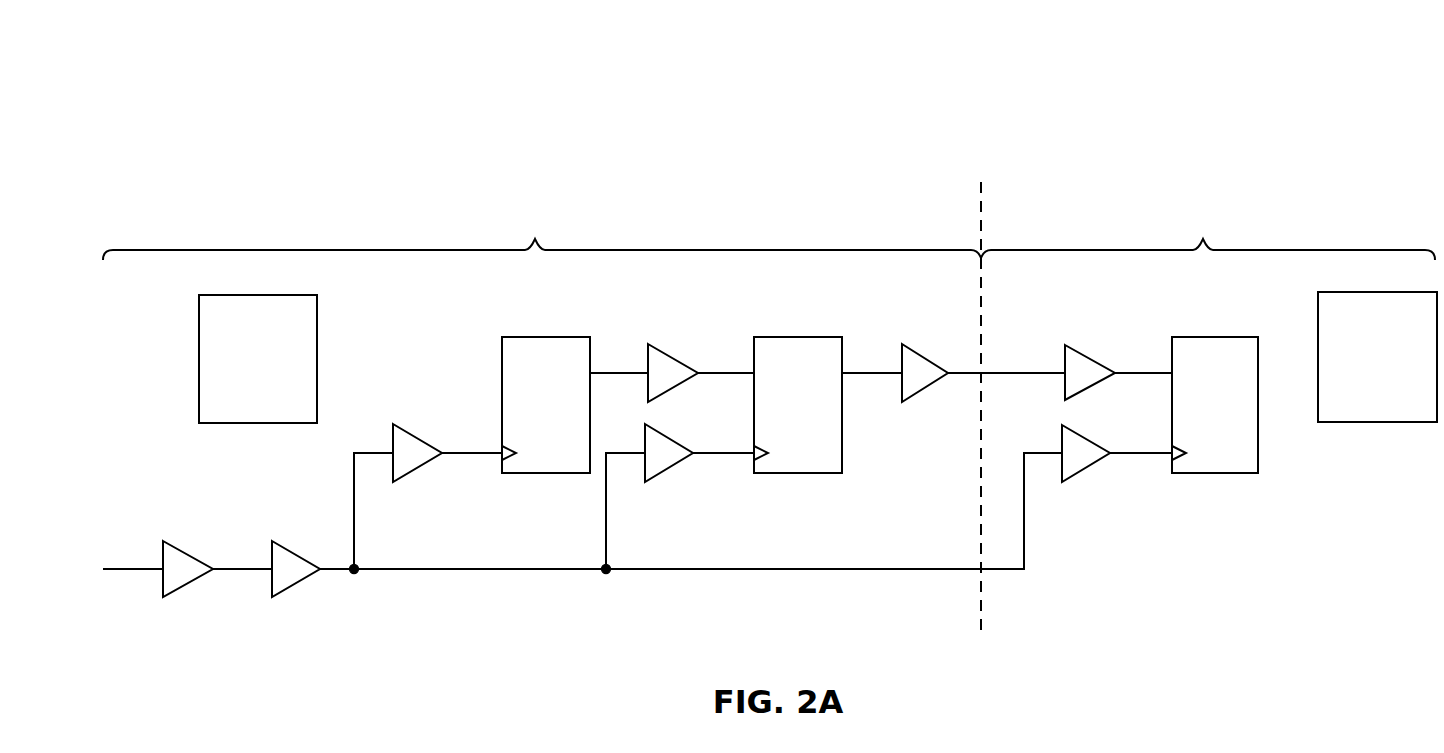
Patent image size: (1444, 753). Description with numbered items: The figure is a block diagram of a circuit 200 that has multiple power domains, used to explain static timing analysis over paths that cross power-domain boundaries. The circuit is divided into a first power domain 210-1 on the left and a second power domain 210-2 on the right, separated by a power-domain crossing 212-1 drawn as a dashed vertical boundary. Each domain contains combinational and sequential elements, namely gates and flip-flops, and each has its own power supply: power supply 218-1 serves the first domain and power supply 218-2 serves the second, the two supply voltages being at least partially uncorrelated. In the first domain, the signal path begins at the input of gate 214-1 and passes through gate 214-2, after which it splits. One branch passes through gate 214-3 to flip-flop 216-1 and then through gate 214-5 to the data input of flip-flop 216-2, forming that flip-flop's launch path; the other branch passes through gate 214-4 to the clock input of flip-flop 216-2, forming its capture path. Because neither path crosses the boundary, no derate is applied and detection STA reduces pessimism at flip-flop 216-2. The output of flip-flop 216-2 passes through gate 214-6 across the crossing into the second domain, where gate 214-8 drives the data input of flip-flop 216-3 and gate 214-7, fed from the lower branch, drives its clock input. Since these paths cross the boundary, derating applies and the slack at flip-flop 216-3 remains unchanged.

The circuit 200 is at (297, 84).
The power domain 210-1 is at (542, 211).
The power domain 210-2 is at (1208, 210).
The power-domain crossing 212-1 is at (982, 201).
The gate 214-1 is at (196, 552).
The gate 214-2 is at (302, 585).
The gate 214-3 is at (427, 441).
The gate 214-4 is at (679, 466).
The gate 214-5 is at (681, 361).
The gate 214-6 is at (934, 361).
The gate 214-7 is at (1096, 465).
The gate 214-8 is at (1101, 360).
The flip-flop 216-1 is at (546, 405).
The flip-flop 216-2 is at (798, 405).
The flip-flop 216-3 is at (1215, 405).
The power supply 218-1 is at (258, 359).
The power supply 218-2 is at (1377, 357).